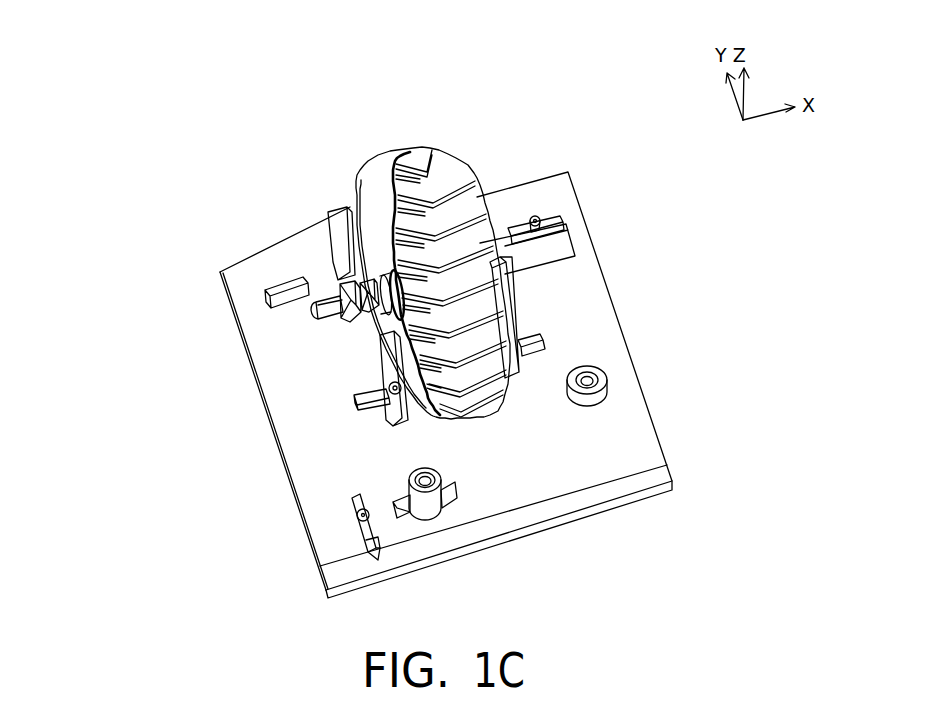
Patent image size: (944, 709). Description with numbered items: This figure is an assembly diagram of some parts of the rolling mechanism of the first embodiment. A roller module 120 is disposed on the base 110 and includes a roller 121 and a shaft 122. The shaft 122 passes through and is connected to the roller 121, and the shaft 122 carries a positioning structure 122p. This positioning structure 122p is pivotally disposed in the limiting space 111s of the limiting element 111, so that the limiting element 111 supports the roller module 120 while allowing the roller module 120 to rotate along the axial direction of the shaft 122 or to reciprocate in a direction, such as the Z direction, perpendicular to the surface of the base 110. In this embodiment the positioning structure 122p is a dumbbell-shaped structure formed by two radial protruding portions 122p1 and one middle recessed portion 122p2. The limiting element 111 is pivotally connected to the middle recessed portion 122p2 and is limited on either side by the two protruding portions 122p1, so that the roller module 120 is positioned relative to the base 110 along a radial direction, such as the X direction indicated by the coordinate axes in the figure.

The base 110 is at (245, 273).
The limiting element 111 is at (375, 353).
The limiting space 111s is at (350, 262).
The roller module 120 is at (640, 63).
The roller 121 is at (418, 167).
The shaft 122 is at (502, 253).
The positioning structure 122p is at (128, 323).
The radial protruding portions 122p1 is at (372, 296).
The middle recessed portion 122p2 is at (378, 304).